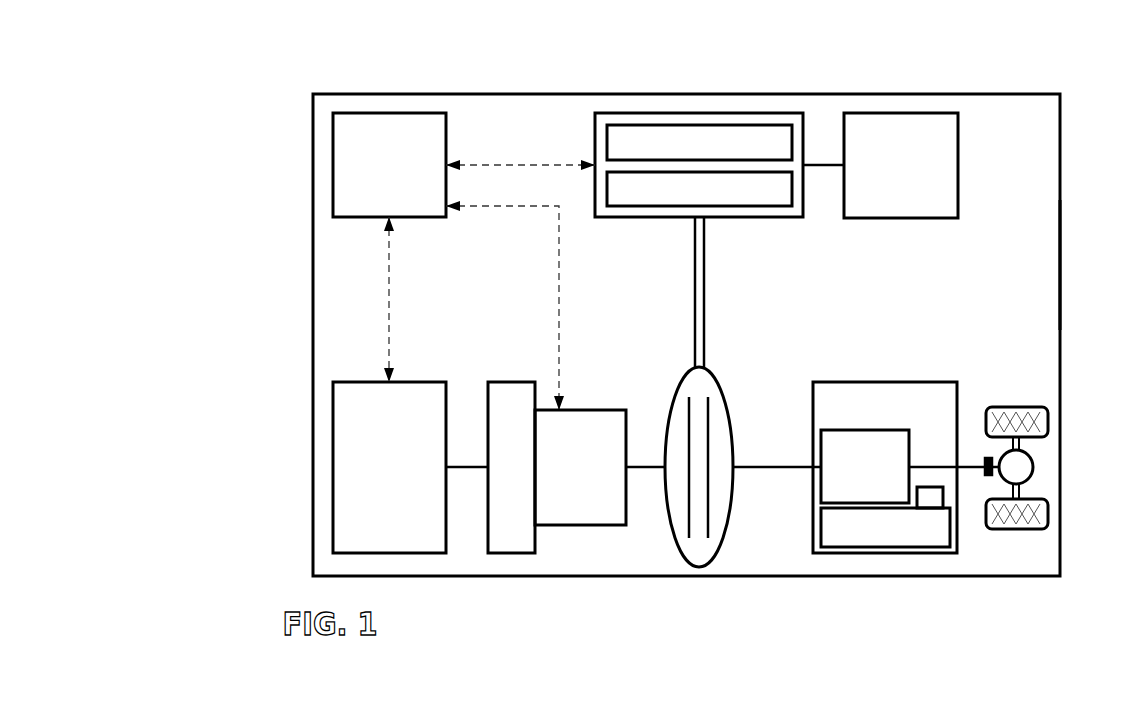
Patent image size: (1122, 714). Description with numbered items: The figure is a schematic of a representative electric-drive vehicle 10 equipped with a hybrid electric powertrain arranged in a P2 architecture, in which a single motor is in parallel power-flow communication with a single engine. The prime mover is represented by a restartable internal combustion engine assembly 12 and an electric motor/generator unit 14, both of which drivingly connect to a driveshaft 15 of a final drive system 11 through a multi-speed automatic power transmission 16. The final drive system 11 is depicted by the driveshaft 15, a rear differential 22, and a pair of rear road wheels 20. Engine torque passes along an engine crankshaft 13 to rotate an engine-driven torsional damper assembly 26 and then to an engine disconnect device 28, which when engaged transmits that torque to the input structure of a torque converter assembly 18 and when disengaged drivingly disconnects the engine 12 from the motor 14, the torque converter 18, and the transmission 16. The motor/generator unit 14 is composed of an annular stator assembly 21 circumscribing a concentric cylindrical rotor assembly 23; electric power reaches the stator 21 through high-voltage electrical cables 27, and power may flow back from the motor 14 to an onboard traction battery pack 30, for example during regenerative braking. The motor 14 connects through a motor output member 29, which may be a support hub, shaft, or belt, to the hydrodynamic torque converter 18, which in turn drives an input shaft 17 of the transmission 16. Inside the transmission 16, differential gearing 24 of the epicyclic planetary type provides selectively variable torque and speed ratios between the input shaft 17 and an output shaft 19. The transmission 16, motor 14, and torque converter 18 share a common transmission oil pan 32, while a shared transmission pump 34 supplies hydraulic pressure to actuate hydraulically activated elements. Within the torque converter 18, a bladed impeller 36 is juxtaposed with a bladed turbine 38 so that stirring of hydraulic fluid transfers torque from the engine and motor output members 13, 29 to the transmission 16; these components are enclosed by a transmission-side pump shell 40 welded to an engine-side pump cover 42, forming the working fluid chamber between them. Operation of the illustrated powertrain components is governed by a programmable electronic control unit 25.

The vehicle 10 is at (298, 71).
The final drive system 11 is at (1040, 285).
The internal combustion engine assembly 12 is at (343, 382).
The engine crankshaft 13 is at (465, 467).
The electric motor/generator unit 14 is at (612, 113).
The driveshaft 15 is at (972, 465).
The multi-speed automatic power transmission 16 is at (827, 382).
The transmission input shaft 17 is at (767, 465).
The torque converter assembly 18 is at (732, 519).
The transmission output shaft 19 is at (645, 465).
The rear road wheels 20 is at (1010, 407).
The stator assembly 21 is at (607, 128).
The rear differential 22 is at (1033, 467).
The rotor assembly 23 is at (607, 175).
The differential gearing 24 is at (873, 430).
The electronic control unit 25 is at (343, 113).
The torsional damper assembly 26 is at (526, 382).
The electrical conductors/cables 27 is at (816, 163).
The engine disconnect device 28 is at (599, 410).
The motor output member 29 is at (694, 248).
The traction battery pack 30 is at (873, 113).
The transmission oil pan 32 is at (862, 527).
The transmission pump 34 is at (927, 497).
The impeller 36 is at (688, 530).
The turbine 38 is at (708, 530).
The pump shell 40 is at (732, 497).
The pump cover 42 is at (668, 522).